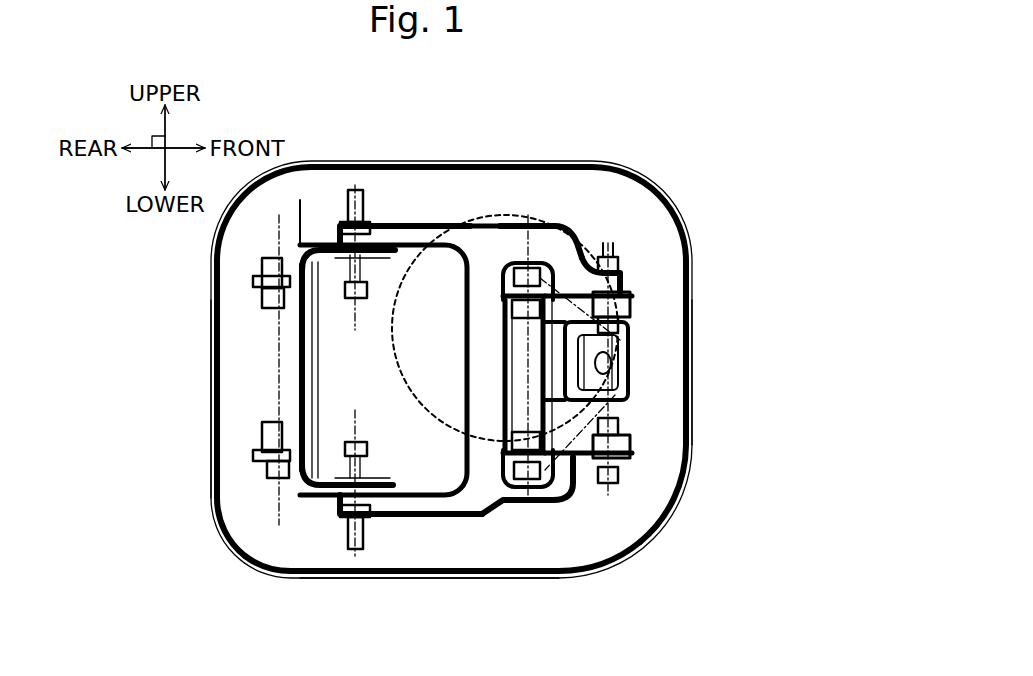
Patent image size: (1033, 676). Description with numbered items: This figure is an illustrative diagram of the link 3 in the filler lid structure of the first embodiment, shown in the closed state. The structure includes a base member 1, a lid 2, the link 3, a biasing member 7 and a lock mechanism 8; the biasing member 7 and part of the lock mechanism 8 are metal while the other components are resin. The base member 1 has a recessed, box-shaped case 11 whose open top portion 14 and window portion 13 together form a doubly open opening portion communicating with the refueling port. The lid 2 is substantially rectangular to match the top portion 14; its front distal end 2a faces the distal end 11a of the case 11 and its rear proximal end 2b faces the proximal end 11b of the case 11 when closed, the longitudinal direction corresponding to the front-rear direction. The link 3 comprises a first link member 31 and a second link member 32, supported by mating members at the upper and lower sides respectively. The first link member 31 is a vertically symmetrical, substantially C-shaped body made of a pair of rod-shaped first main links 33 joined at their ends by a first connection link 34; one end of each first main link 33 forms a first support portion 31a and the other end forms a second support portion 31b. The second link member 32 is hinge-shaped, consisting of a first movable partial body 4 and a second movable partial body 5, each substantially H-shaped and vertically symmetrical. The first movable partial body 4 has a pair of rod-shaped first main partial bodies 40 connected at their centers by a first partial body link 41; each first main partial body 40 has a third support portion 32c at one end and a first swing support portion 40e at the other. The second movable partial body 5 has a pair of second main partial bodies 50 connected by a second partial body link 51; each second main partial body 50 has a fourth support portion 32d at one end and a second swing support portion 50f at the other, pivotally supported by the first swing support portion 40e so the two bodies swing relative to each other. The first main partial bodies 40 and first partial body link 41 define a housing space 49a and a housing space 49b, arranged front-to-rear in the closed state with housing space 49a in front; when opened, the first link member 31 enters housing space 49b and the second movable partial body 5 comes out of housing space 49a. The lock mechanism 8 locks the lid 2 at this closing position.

The base member 1 is at (443, 165).
The lid 2 is at (496, 190).
The distal end 2a is at (690, 345).
The proximal end 2b is at (236, 363).
The link 3 is at (301, 240).
The first movable partial body 4 is at (474, 514).
The second movable partial body 5 is at (581, 268).
The biasing member 7 is at (328, 495).
The lock mechanism 8 is at (640, 371).
The case 11 is at (423, 578).
The distal end 11a is at (692, 361).
The proximal end 11b is at (217, 392).
The window portion 13 is at (388, 222).
The top portion 14 is at (517, 576).
The first link member 31 is at (303, 503).
The first support portion 31a is at (329, 298).
The second support portion 31b is at (262, 319).
The second link member 32 is at (579, 499).
The third support portion 32c is at (368, 297).
The fourth support portion 32d is at (508, 307).
The first main link 33 is at (318, 245).
The first connection link 34 is at (280, 355).
The first main partial body 40 is at (421, 225).
The first swing support portion 40e is at (622, 262).
The first partial body link 41 is at (479, 346).
The housing space 49a is at (507, 245).
The housing space 49b is at (476, 230).
The second main partial body 50 is at (552, 290).
The second swing support portion 50f is at (632, 309).
The second partial body link 51 is at (540, 364).